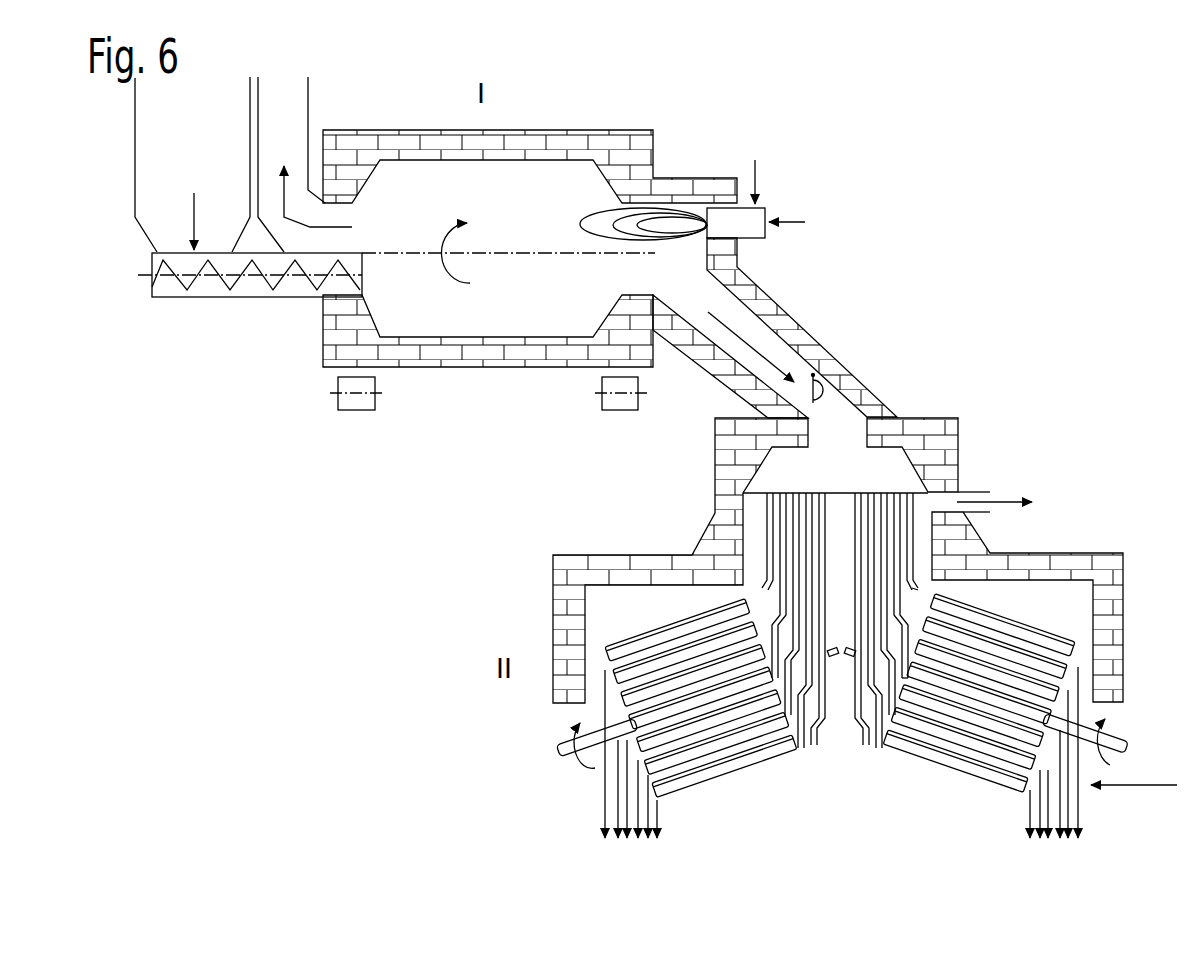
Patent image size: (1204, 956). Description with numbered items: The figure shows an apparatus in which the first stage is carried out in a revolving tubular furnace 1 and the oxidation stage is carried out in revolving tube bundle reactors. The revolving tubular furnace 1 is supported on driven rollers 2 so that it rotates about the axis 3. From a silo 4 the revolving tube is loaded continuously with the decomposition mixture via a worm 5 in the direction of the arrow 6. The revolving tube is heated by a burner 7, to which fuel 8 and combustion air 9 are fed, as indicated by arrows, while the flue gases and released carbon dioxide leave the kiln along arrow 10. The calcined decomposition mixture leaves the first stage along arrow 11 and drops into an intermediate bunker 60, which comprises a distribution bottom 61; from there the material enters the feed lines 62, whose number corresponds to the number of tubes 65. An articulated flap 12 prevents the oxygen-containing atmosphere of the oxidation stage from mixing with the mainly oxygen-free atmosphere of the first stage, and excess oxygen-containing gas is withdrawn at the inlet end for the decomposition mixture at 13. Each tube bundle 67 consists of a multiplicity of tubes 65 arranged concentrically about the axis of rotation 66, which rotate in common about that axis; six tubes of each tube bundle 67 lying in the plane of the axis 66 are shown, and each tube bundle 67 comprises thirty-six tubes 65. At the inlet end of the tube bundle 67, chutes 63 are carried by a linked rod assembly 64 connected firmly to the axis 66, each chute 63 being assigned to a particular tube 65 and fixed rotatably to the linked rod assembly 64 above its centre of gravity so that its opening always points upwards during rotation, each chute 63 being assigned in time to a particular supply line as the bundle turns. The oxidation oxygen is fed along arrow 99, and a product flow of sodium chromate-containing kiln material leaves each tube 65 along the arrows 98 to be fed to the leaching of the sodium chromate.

The revolving tubular furnace 1 is at (492, 363).
The driven rollers 2 is at (362, 406).
The axis 3 is at (535, 254).
The silo 4 is at (135, 165).
The worm 5 is at (244, 298).
The arrow (feed direction) 6 is at (195, 212).
The burner 7 is at (753, 233).
The fuel 8 is at (800, 222).
The combustion air 9 is at (758, 177).
The arrow (flue gas outlet) 10 is at (318, 166).
The arrow (calcined mixture path) 11 is at (722, 372).
The articulated flap 12 is at (817, 397).
The excess gas withdrawal 13 is at (1002, 492).
The intermediate bunker 60 is at (851, 477).
The distribution bottom 61 is at (848, 493).
The feed lines 62 is at (855, 530).
The chutes 63 is at (882, 746).
The linked rod assembly 64 is at (862, 733).
The tubes 65 is at (928, 758).
The axis of rotation 66 is at (1135, 727).
The tube bundle 67 is at (742, 783).
The arrows (product discharge) 98 is at (605, 808).
The arrow (oxidation oxygen feed) 99 is at (1170, 787).